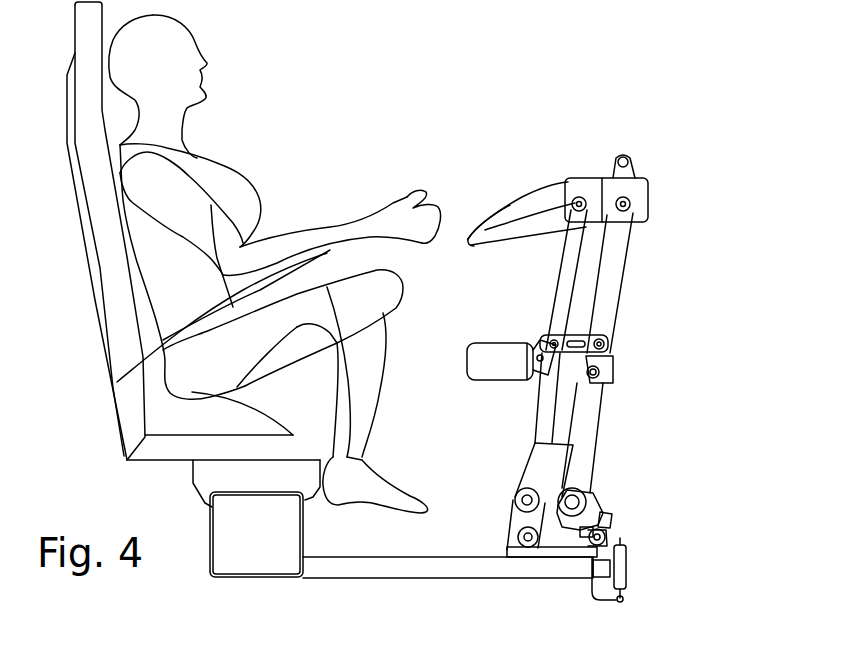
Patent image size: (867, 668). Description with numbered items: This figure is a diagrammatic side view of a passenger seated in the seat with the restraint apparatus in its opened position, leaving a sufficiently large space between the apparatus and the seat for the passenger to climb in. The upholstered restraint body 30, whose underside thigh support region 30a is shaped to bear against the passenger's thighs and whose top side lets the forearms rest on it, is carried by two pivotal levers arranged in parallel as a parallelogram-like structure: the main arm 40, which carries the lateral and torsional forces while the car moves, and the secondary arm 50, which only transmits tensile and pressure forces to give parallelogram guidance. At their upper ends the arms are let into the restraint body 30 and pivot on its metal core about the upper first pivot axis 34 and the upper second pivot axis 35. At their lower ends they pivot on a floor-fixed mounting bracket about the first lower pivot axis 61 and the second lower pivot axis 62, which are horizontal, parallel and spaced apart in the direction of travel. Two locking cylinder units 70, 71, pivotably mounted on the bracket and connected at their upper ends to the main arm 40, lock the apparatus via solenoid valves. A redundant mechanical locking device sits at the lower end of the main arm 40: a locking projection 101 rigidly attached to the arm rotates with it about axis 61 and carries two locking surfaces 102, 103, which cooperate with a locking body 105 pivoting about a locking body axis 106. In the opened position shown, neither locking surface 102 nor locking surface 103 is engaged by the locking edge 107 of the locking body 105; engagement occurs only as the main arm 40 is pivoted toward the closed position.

The restraint body 30 is at (575, 187).
The armrest pad 30a is at (513, 240).
The upper first pivot axis 34 is at (627, 201).
The upper second pivot axis 35 is at (576, 200).
The main arm 40 is at (607, 310).
The secondary arm 50 is at (582, 275).
The first lower pivot axis 61 is at (587, 490).
The second lower pivot axis 62 is at (516, 497).
The locking cylinder unit 70 is at (557, 460).
The locking cylinder unit 71 is at (547, 398).
The locking projection 101 is at (590, 513).
The locking surface 102 is at (587, 532).
The locking surface 103 is at (580, 528).
The locking body 105 is at (610, 527).
The locking body axis 106 is at (620, 548).
The locking edge 107 is at (610, 522).